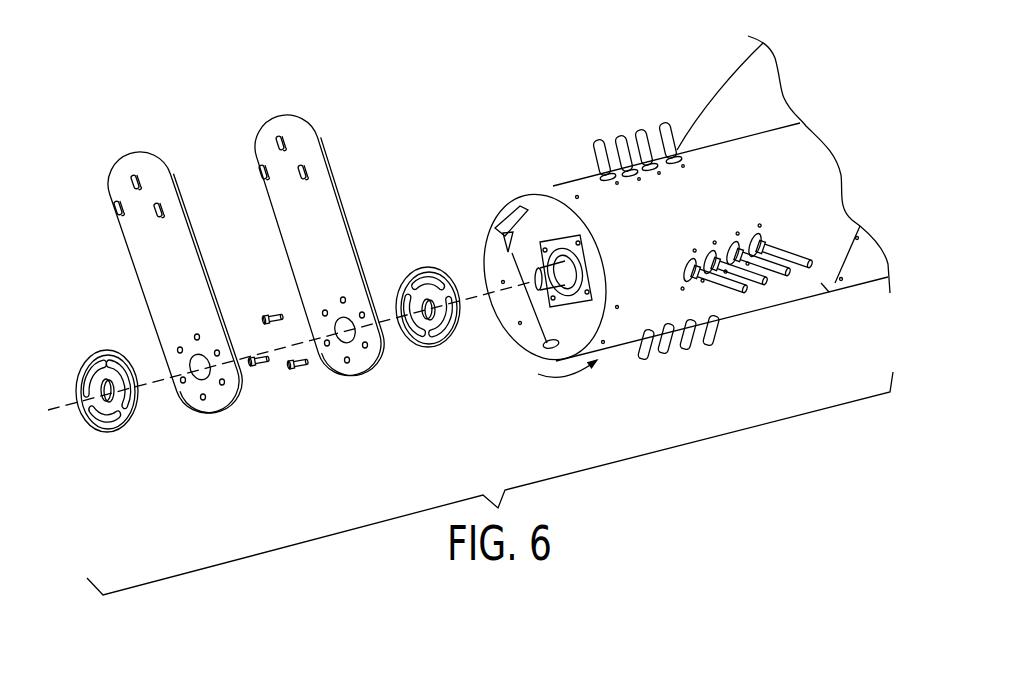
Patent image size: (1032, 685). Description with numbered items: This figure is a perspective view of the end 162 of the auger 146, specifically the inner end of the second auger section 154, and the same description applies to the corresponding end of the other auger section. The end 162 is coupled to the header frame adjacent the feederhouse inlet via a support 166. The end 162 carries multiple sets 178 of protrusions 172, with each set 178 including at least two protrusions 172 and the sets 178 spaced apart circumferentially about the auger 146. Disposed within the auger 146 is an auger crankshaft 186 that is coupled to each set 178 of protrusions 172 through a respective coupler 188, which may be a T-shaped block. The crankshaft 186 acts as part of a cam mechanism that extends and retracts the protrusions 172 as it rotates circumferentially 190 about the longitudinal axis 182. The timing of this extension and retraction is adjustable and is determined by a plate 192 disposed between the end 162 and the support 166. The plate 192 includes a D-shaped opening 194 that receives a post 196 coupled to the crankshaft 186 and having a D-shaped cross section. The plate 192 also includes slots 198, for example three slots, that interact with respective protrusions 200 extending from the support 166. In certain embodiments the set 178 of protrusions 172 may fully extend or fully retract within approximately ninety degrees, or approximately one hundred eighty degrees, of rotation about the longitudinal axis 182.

The auger 146 is at (632, 130).
The second auger section 154 is at (733, 145).
The end 162 is at (563, 183).
The support 166 is at (216, 402).
The protrusions 172 is at (738, 295).
The sets of protrusions 178 is at (782, 285).
The longitudinal axis 182 is at (83, 393).
The auger crankshaft 186 is at (825, 287).
The coupler 188 is at (657, 310).
The circumferential rotation 190 is at (563, 377).
The plate 192 is at (128, 420).
The D-shaped opening 194 is at (405, 283).
The post 196 is at (538, 287).
The slots 198 is at (440, 342).
The protrusions 200 is at (301, 369).